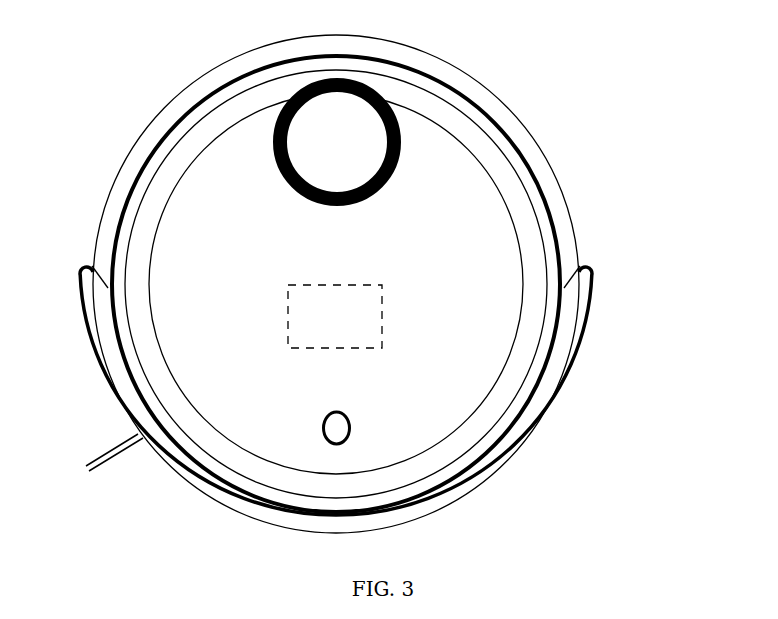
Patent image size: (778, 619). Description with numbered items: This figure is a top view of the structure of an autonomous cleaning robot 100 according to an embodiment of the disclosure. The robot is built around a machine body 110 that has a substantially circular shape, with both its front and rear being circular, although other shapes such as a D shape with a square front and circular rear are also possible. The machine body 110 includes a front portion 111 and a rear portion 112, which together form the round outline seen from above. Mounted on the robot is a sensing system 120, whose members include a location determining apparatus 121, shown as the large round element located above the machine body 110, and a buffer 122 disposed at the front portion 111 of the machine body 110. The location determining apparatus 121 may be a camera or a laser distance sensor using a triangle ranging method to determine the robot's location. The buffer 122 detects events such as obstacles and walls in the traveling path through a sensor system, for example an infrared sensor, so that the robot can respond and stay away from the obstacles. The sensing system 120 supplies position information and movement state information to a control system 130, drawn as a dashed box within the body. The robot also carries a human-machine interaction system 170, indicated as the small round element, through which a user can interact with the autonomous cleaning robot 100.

The autonomous cleaning robot 100 is at (546, 49).
The machine body 110 is at (492, 178).
The front portion 111 is at (503, 413).
The rear portion 112 is at (491, 117).
The sensing system 120 is at (701, 264).
The location determining apparatus 121 is at (393, 180).
The buffer 122 is at (580, 333).
The control system 130 is at (375, 347).
The human-machine interaction system 170 is at (322, 432).